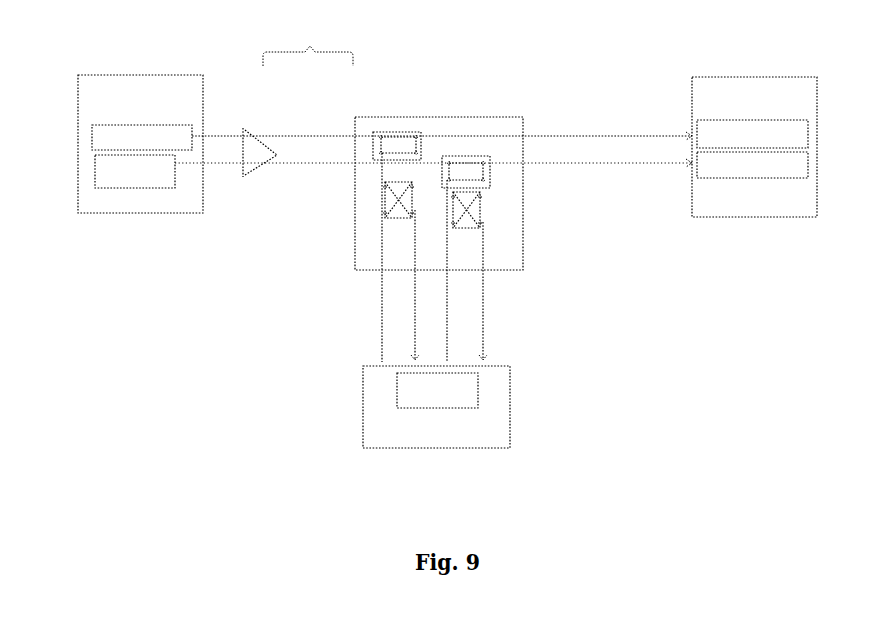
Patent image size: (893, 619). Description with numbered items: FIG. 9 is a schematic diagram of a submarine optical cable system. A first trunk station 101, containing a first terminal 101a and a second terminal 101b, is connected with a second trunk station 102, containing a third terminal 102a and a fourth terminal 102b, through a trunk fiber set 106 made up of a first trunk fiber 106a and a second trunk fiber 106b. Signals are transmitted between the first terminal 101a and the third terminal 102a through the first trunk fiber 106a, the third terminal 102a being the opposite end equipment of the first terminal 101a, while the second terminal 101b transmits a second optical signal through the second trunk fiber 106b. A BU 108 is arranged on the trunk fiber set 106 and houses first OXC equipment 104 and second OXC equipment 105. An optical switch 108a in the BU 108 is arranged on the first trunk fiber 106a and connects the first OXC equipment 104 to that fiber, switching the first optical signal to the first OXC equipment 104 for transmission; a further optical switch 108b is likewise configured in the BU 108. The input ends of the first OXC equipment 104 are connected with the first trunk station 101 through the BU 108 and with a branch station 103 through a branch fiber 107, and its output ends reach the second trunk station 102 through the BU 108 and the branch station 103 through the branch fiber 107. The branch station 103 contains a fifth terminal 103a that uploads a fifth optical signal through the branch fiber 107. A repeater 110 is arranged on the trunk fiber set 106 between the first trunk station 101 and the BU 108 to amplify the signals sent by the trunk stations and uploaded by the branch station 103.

The first trunk station 101 is at (78, 74).
The first terminal 101a is at (90, 135).
The second terminal 101b is at (92, 167).
The second trunk station 102 is at (745, 65).
The third terminal 102a is at (808, 138).
The fourth terminal 102b is at (808, 168).
The branch station 103 is at (435, 450).
The fifth terminal 103a is at (480, 395).
The first OXC equipment 104 is at (385, 201).
The second OXC equipment 105 is at (480, 208).
The trunk fiber set 106 is at (308, 44).
The first trunk fiber 106a is at (215, 134).
The second trunk fiber 106b is at (276, 156).
The branch fiber 107 is at (380, 282).
The BU 108 is at (447, 117).
The optical switch 108a is at (398, 131).
The optical switch 108b is at (490, 175).
The repeater 110 is at (245, 177).